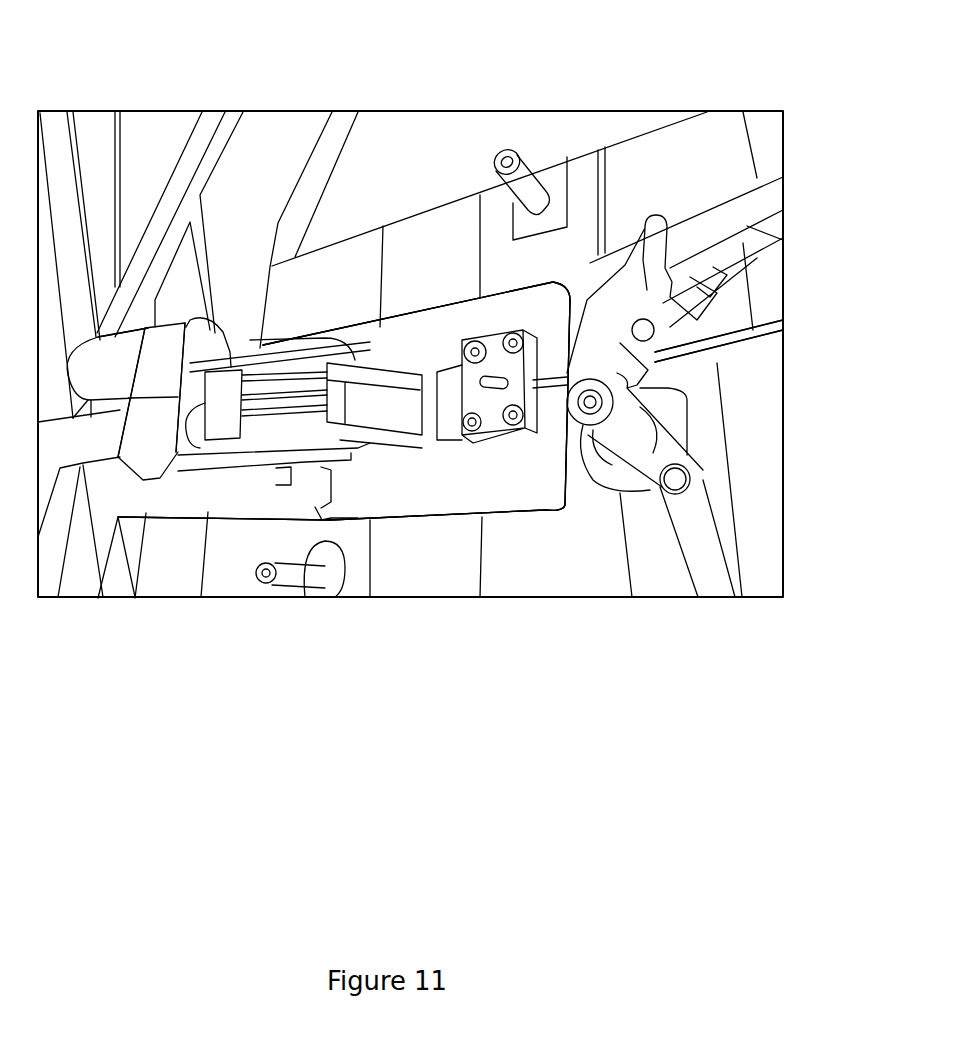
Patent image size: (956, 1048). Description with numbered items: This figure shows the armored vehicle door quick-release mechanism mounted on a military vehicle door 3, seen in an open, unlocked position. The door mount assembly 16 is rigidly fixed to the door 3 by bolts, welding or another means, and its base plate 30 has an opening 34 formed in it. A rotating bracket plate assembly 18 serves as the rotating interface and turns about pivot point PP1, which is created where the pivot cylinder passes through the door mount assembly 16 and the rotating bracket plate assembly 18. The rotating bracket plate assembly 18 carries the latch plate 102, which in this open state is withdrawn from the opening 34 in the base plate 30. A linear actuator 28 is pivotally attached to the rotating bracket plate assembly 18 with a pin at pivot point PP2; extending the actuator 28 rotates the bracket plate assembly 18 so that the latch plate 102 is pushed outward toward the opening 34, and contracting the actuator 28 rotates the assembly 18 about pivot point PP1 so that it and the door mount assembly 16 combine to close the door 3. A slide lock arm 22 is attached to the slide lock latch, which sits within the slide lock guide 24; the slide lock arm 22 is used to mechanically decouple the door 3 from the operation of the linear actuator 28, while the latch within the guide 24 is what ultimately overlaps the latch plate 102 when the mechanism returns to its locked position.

The armored vehicle door 3 is at (257, 175).
The linear actuator 28 is at (178, 456).
The latch plate 102 is at (225, 424).
The rotating bracket plate assembly 18 is at (398, 417).
The opening 34 is at (447, 431).
The slide lock guide 24 is at (502, 427).
The door mount assembly 16 is at (488, 477).
The base plate 30 is at (488, 477).
The slide lock arm 22 is at (730, 340).
The pivot point PP1 is at (337, 401).
The pivot point PP2 is at (281, 486).